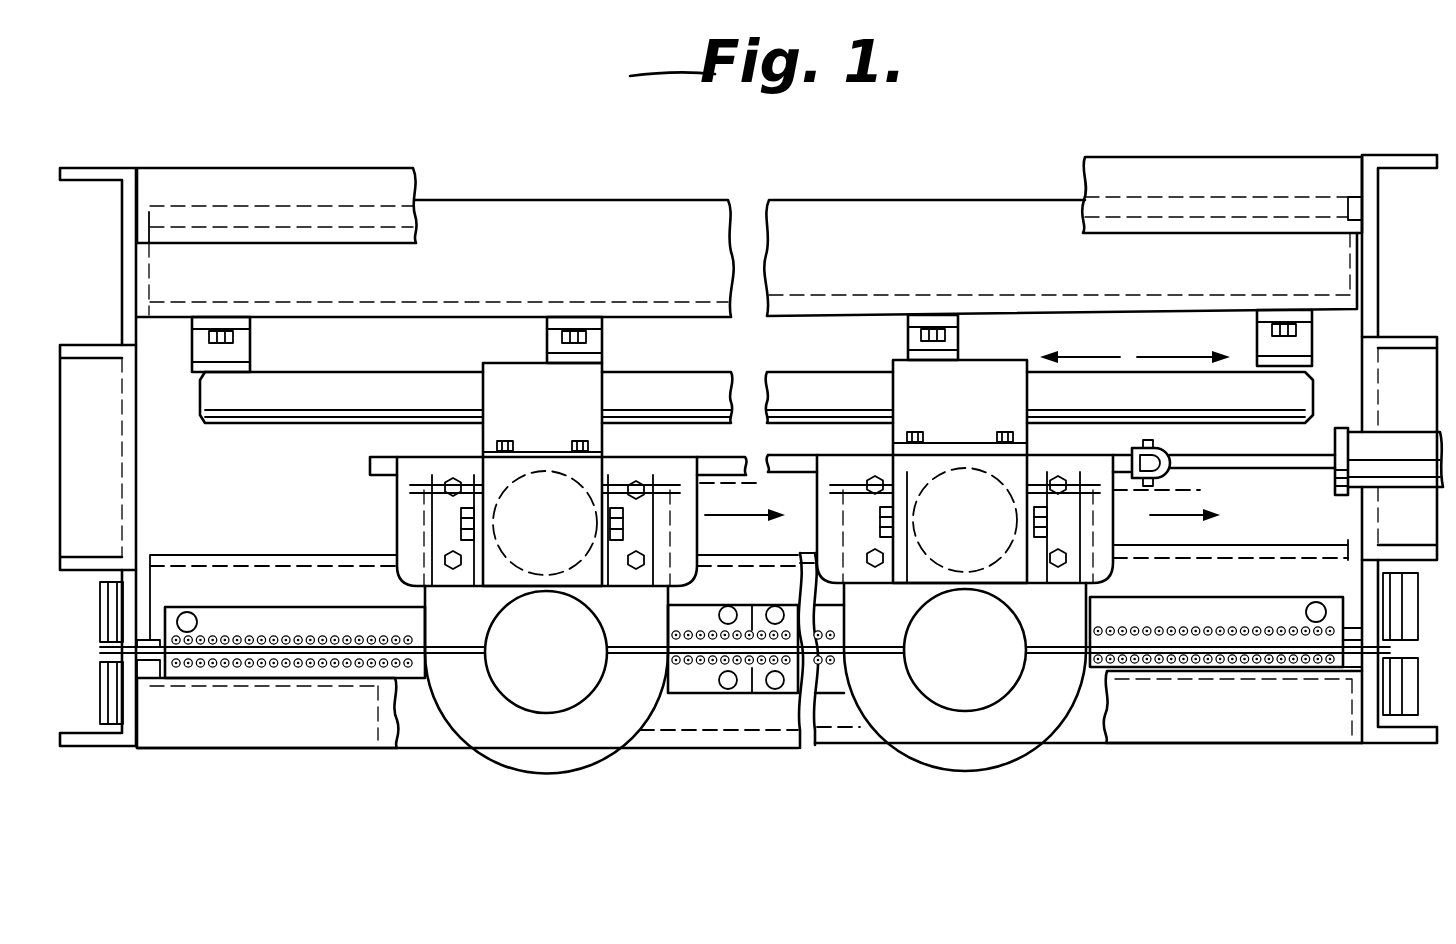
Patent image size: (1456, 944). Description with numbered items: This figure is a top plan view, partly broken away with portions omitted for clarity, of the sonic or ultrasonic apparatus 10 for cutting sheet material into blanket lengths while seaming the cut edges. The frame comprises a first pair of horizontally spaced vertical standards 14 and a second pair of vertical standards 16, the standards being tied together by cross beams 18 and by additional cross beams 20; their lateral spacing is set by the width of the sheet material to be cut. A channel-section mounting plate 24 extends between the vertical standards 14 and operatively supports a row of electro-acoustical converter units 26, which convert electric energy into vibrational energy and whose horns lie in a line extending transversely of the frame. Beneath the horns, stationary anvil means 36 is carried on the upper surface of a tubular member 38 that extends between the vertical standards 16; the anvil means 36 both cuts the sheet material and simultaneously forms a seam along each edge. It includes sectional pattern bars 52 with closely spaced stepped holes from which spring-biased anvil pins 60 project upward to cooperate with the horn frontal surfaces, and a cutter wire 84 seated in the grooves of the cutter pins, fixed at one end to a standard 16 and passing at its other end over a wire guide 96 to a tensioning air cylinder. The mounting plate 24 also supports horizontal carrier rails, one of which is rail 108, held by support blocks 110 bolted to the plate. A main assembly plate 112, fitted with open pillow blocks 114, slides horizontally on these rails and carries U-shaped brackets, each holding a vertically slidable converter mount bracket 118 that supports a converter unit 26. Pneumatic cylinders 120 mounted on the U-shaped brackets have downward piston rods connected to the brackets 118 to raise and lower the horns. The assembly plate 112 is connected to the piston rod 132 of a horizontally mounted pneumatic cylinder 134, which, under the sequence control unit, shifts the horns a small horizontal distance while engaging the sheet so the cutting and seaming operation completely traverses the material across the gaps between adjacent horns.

The sonic or ultrasonic apparatus 10 is at (728, 770).
The first pair of vertical standards 14 is at (120, 168).
The second pair of vertical standards 16 is at (107, 752).
The cross beams 18 is at (365, 168).
The additional cross beams 20 is at (58, 365).
The mounting plate 24 is at (852, 320).
The electro-acoustical converter units 26 is at (548, 713).
The anvil means 36 is at (333, 688).
The tubular member 38 is at (378, 765).
The pattern bar 52 is at (725, 606).
The anvil pins 60 is at (1200, 630).
The cutter wire 84 is at (1306, 667).
The wire guide 96 is at (1385, 745).
The carrier rail 108 is at (365, 378).
The support blocks 110 is at (252, 347).
The main assembly plate 112 is at (742, 457).
The open pillow blocks 114 is at (530, 363).
The converter mount bracket 118 is at (710, 494).
The pneumatic cylinders 120 is at (560, 445).
The piston rod 132 is at (1222, 462).
The horizontally mounted pneumatic cylinder 134 is at (1385, 480).